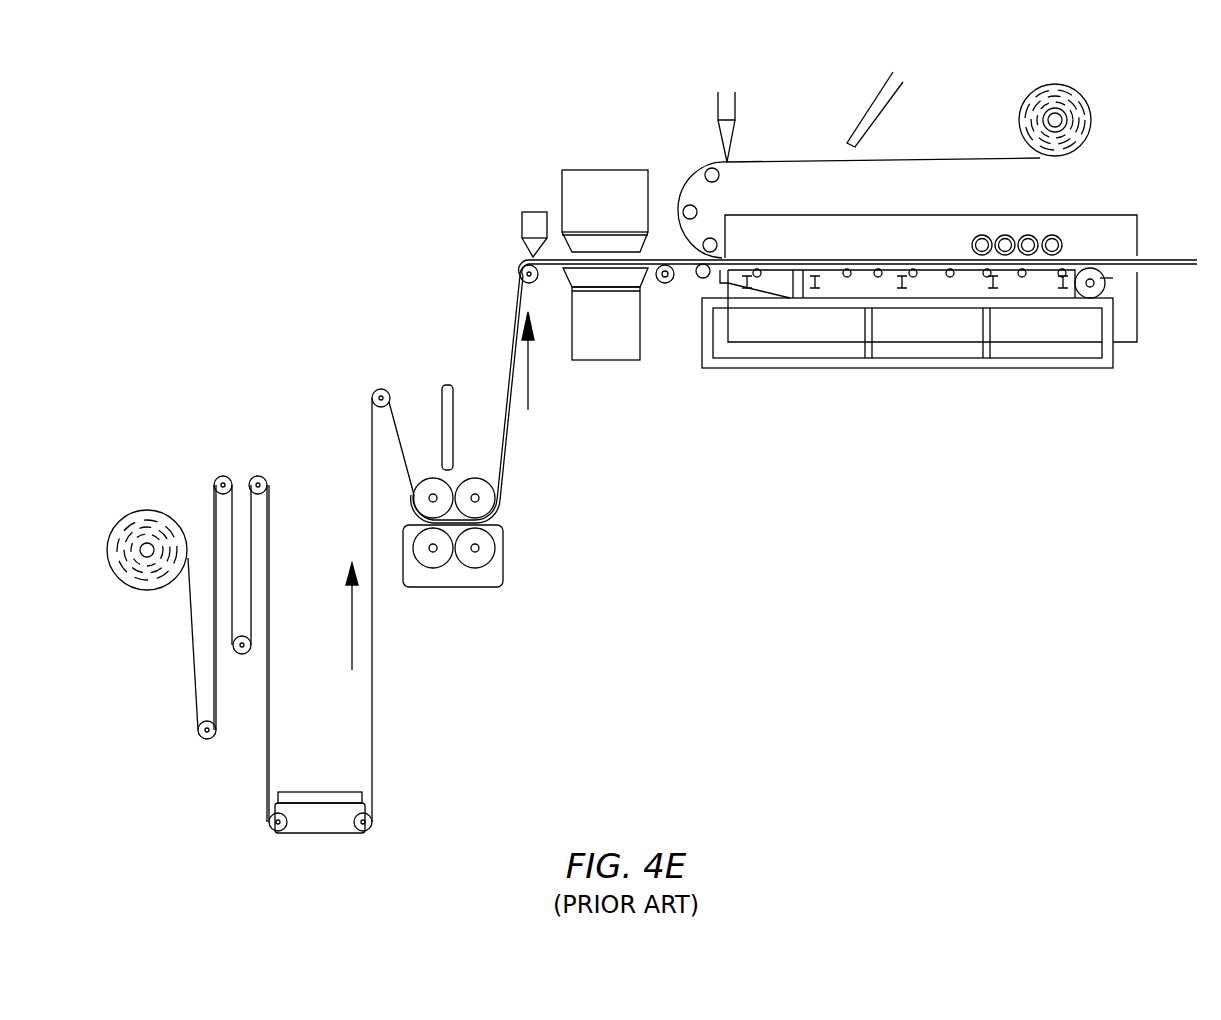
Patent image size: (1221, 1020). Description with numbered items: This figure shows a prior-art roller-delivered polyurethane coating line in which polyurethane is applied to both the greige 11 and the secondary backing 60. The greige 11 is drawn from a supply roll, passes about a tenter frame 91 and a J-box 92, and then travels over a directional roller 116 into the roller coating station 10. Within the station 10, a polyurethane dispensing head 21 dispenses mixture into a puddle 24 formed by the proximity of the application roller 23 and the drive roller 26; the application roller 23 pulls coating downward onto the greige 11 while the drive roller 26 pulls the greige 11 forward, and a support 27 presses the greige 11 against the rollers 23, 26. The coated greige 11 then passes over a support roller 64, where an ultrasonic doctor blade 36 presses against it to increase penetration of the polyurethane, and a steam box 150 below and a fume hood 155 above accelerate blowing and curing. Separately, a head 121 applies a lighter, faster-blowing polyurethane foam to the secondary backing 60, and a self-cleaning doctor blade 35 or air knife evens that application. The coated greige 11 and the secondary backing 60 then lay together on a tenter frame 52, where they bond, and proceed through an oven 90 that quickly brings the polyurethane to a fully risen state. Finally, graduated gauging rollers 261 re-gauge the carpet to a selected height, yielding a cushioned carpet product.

The roller coating station 10 is at (442, 461).
The greige 11 is at (180, 510).
The polyurethane dispensing head 21 is at (448, 383).
The application roller 23 is at (427, 480).
The puddle 24 is at (455, 482).
The drive roller 26 is at (485, 507).
The support 27 is at (448, 598).
The self-cleaning doctor blade 35 is at (737, 138).
The ultrasonic doctor blade 36 is at (528, 230).
The tenter frame 52 is at (963, 257).
The secondary backing 60 is at (1037, 85).
The support roller 64 is at (518, 283).
The oven 90 is at (818, 250).
The tenter frame 91 is at (240, 460).
The J-box 92 is at (305, 775).
The directional roller 116 is at (380, 388).
The head 121 is at (870, 103).
The steam box 150 is at (593, 363).
The fume hood 155 is at (620, 170).
The graduated gauging rollers 261 is at (982, 235).